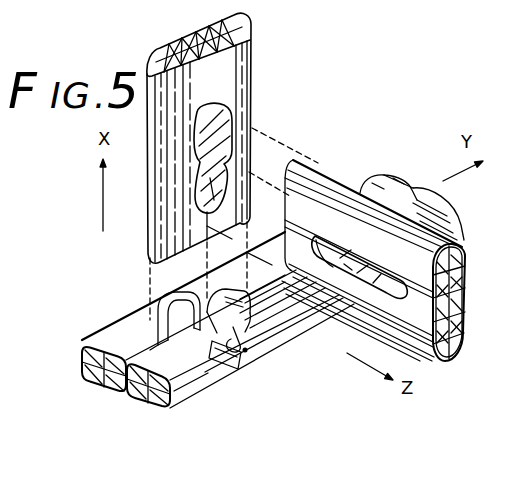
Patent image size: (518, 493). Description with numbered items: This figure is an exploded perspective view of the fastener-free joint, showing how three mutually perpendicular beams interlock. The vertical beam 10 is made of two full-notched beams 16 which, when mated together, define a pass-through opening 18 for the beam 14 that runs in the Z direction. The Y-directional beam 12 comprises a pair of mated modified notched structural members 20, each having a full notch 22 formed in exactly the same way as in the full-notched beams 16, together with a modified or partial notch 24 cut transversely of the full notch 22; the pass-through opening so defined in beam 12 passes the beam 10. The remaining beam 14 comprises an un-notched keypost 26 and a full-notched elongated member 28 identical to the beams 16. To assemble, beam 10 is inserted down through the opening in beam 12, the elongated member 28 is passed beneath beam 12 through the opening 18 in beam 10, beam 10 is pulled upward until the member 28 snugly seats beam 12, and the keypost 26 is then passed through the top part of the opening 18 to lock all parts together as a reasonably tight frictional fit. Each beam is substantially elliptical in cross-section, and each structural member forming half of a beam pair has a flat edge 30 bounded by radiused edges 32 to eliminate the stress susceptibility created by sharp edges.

The beam 10 is at (256, 57).
The beam 12 is at (112, 321).
The beam 14 is at (331, 168).
The full-notched beams 16 is at (198, 86).
The pass-through opening 18 is at (233, 124).
The modified notched structural members 20 is at (186, 293).
The full notch 22 is at (255, 306).
The partial notch 24 is at (238, 368).
The keypost 26 is at (336, 189).
The elongated member 28 is at (371, 319).
The flat edge 30 is at (113, 388).
The radiused edges 32 is at (184, 40).